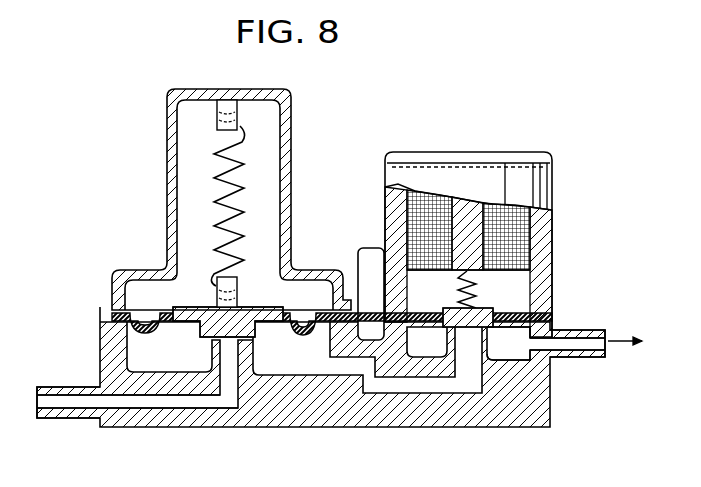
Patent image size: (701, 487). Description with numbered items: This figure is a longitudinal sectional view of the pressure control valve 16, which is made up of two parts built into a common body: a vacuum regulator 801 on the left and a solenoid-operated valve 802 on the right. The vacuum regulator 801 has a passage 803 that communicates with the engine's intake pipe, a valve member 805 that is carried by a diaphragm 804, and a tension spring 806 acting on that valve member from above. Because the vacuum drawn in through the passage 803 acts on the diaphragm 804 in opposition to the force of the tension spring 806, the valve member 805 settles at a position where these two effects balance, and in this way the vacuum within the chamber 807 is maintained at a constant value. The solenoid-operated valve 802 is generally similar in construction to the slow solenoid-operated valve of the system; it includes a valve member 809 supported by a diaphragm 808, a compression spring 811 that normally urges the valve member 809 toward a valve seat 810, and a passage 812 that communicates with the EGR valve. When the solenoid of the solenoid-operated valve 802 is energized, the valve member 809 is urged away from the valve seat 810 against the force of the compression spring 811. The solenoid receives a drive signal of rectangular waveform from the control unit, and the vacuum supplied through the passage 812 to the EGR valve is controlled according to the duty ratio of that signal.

The pressure control valve 16 is at (396, 117).
The vacuum regulator 801 is at (192, 88).
The solenoid-operated valve 802 is at (495, 223).
The passage 803 is at (63, 400).
The diaphragm 804 is at (140, 318).
The valve member 805 is at (212, 337).
The tension spring 806 is at (215, 186).
The chamber 807 is at (295, 362).
The diaphragm 808 is at (530, 316).
The valve member 809 is at (505, 330).
The valve seat 810 is at (525, 356).
The compression spring 811 is at (457, 290).
The passage 812 is at (585, 346).